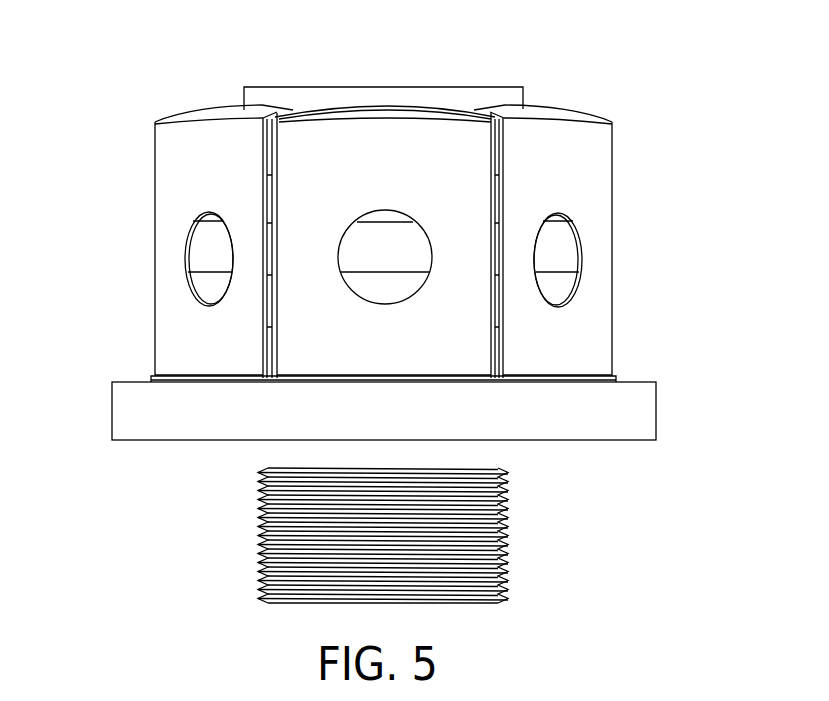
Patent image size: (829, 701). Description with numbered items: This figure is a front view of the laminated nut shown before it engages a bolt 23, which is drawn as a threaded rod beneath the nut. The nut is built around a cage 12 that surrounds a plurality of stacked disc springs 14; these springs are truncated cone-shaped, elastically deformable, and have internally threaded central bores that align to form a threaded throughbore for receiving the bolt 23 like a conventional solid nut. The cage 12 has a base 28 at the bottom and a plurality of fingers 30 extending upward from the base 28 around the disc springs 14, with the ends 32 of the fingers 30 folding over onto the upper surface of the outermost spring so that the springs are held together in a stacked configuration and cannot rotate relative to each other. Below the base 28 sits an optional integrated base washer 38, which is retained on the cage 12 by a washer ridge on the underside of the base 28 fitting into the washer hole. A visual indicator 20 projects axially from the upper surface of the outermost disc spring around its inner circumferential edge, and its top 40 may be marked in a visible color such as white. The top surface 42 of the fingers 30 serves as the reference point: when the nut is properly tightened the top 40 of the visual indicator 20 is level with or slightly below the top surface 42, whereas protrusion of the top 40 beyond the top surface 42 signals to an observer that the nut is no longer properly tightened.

The cage 12 is at (168, 207).
The disc springs 14 is at (556, 243).
The visual indicator 20 is at (390, 196).
The bolt 23 is at (505, 553).
The base 28 is at (614, 380).
The fingers 30 is at (449, 147).
The ends of the fingers 32 is at (535, 110).
The base washer 38 is at (638, 428).
The top of the visual indicator 40 is at (267, 88).
The top surface of the fingers 42 is at (237, 102).